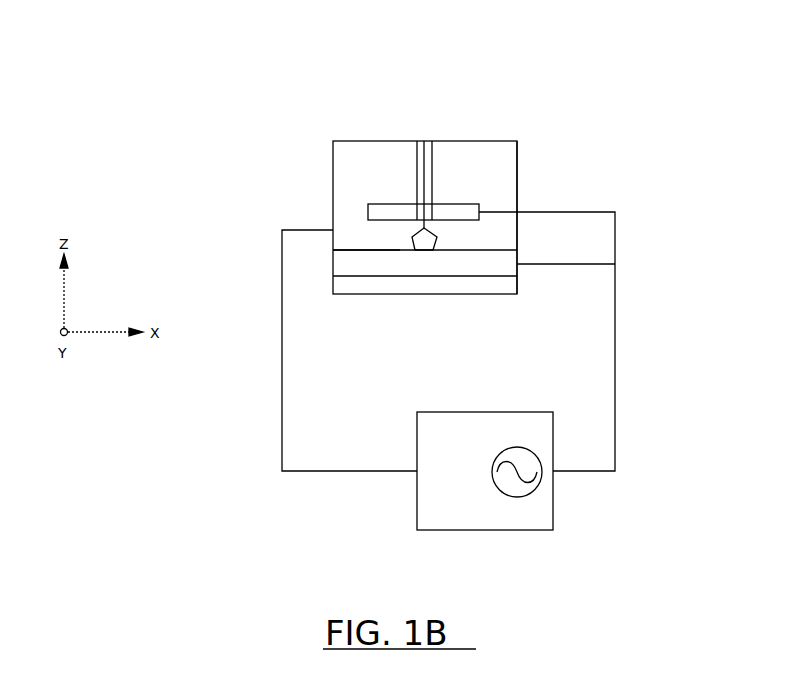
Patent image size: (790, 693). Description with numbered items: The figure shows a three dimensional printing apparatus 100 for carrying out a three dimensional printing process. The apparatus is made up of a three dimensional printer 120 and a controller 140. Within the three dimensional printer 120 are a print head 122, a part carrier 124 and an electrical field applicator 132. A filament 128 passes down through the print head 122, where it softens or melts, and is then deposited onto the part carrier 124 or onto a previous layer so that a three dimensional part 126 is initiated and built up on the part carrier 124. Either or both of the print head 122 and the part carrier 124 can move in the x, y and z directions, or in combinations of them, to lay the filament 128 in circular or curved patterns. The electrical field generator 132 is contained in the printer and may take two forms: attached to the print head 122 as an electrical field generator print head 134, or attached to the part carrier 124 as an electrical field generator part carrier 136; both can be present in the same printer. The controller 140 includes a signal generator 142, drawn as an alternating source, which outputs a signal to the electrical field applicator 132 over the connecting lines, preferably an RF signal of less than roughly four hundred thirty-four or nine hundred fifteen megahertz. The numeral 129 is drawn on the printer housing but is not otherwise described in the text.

The three dimensional printing apparatus 100 is at (641, 98).
The three dimensional printer 120 is at (344, 141).
The print head 122 is at (417, 160).
The part carrier 124 is at (365, 276).
The three dimensional part 126 is at (438, 237).
The filament 128 is at (432, 160).
The chamber wall 129 is at (504, 141).
The electrical field applicator 132 is at (463, 203).
The electrical field generator print head 134 is at (368, 212).
The electrical field generator part carrier 136 is at (363, 250).
The controller 140 is at (490, 530).
The signal generator 142 is at (518, 447).